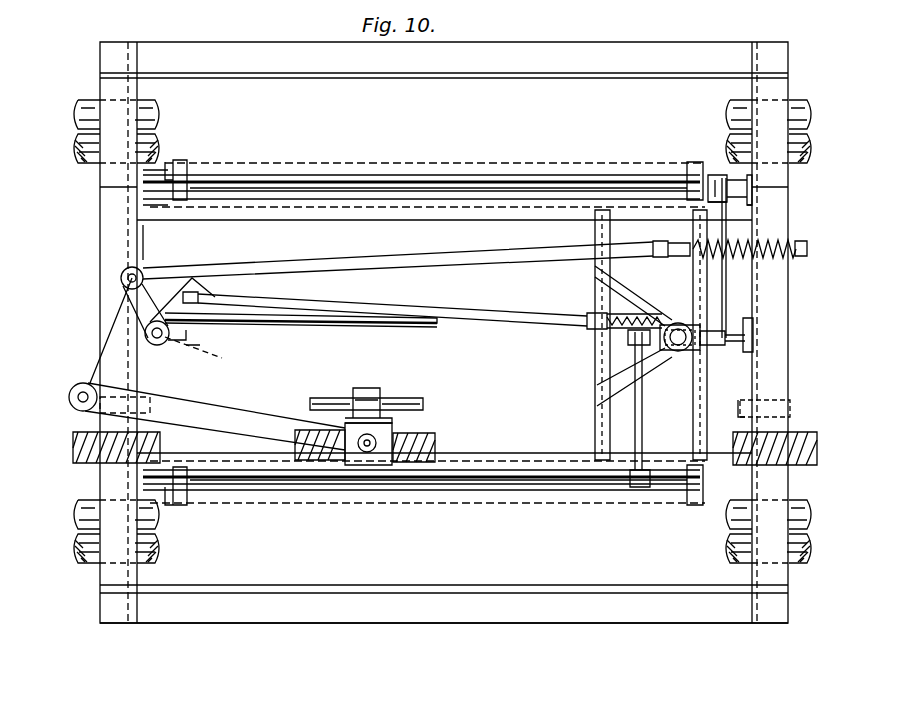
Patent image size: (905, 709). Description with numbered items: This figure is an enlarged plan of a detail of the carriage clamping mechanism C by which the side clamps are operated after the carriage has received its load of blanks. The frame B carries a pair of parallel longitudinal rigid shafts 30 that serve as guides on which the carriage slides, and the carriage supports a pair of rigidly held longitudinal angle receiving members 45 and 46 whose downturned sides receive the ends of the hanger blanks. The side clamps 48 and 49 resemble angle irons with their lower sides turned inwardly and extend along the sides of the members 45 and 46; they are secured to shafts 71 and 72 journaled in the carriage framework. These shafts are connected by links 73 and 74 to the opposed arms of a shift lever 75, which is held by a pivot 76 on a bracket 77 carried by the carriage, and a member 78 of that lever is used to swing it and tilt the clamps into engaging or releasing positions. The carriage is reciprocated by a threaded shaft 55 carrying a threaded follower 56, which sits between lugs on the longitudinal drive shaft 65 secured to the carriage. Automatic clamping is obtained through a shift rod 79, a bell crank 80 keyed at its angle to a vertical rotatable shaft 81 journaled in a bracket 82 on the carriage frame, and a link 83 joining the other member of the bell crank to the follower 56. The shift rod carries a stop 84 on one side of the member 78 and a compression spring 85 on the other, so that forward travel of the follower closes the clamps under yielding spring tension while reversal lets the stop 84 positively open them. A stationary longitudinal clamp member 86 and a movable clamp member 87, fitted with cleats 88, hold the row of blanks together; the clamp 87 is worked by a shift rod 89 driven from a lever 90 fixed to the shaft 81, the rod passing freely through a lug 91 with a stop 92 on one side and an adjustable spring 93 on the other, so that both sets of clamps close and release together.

The carriage clamping mechanism C is at (100, 242).
The frame B is at (321, 619).
The shafts 30 is at (157, 123).
The angle receiving member 45 is at (265, 215).
The angle receiving member 46 is at (565, 452).
The side clamp 48 is at (437, 162).
The side clamp 49 is at (450, 503).
The threaded shaft 55 is at (435, 445).
The threaded follower 56 is at (395, 425).
The longitudinal drive shaft 65 is at (410, 400).
The shaft 71 is at (335, 192).
The shaft 72 is at (302, 478).
The link 73 is at (727, 272).
The link 74 is at (642, 420).
The shift lever 75 is at (612, 365).
The pivot 76 is at (585, 329).
The bracket 77 is at (750, 331).
The member 78 is at (600, 279).
The shift rod 79 is at (436, 256).
The bell crank 80 is at (143, 295).
The vertical rotatable shaft 81 is at (150, 335).
The bracket 82 is at (173, 375).
The link 83 is at (265, 411).
The stop 84 is at (653, 249).
The compression spring 85 is at (760, 248).
The longitudinal clamp member 86 is at (140, 240).
The longitudinal clamp member 87 is at (595, 408).
The cleats 88 is at (723, 296).
The shift rod 89 is at (455, 314).
The lever 90 is at (215, 312).
The lug 91 is at (603, 330).
The stop 92 is at (585, 321).
The adjustable spring 93 is at (605, 314).